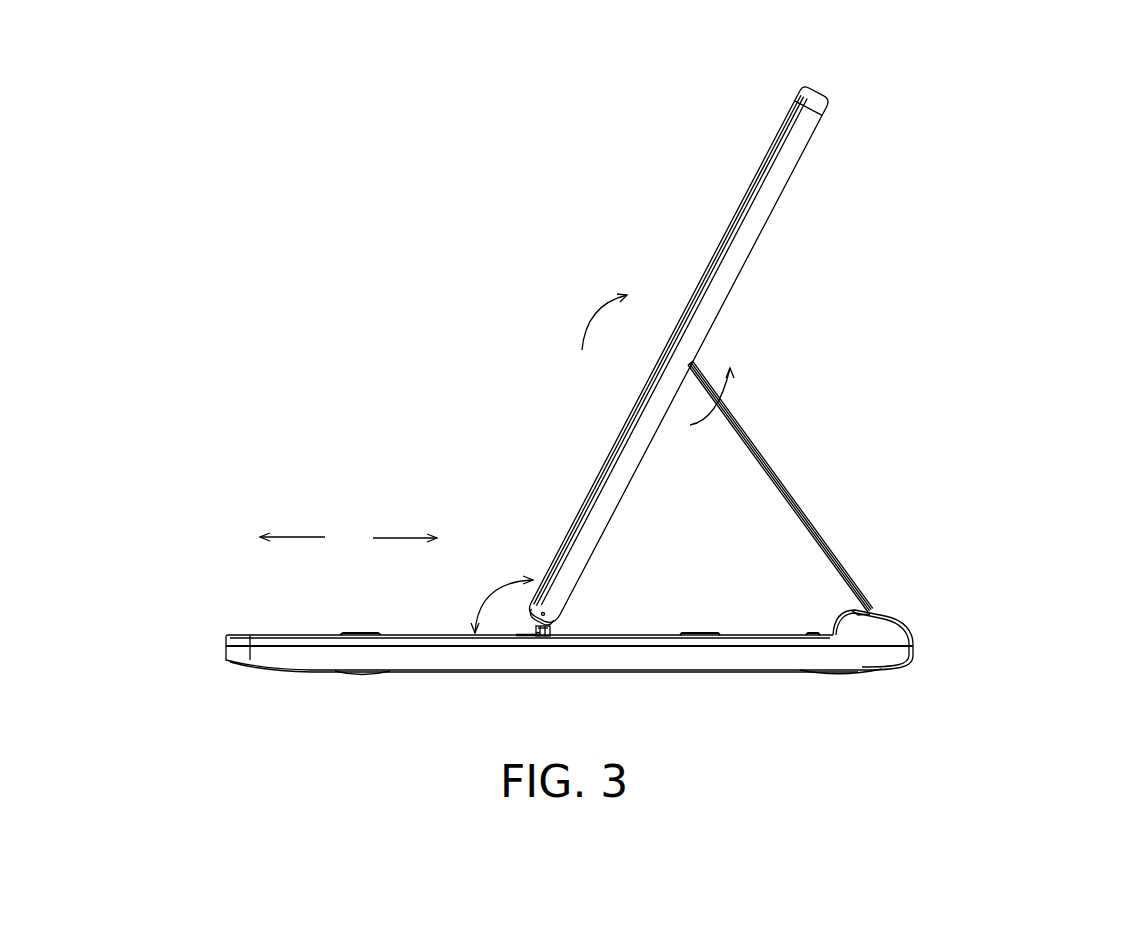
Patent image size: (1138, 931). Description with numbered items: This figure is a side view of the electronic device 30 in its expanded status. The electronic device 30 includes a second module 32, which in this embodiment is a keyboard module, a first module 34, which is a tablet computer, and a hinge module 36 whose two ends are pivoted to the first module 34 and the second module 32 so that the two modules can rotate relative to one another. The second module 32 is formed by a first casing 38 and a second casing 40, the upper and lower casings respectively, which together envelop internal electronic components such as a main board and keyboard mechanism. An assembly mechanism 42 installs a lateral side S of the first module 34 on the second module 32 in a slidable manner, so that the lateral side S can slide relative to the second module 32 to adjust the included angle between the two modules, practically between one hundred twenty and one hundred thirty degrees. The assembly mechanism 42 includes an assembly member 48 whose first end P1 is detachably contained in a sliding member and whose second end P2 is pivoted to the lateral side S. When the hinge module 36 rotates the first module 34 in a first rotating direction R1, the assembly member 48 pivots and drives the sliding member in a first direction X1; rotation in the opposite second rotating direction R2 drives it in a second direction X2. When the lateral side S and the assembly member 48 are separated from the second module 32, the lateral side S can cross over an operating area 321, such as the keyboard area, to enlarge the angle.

The electronic device 30 is at (990, 96).
The second module 32 is at (222, 620).
The first module 34 is at (780, 172).
The hinge module 36 is at (812, 515).
The first casing 38 is at (268, 634).
The second casing 40 is at (300, 662).
The assembly mechanism 42 is at (513, 628).
The assembly member 48 is at (548, 637).
The operating area 321 is at (360, 633).
The first end P1 is at (538, 637).
The second end P2 is at (543, 613).
The lateral side S is at (546, 630).
The first direction X1 is at (292, 526).
The second direction X2 is at (405, 526).
The first rotating direction R1 is at (593, 322).
The second rotating direction R2 is at (728, 396).